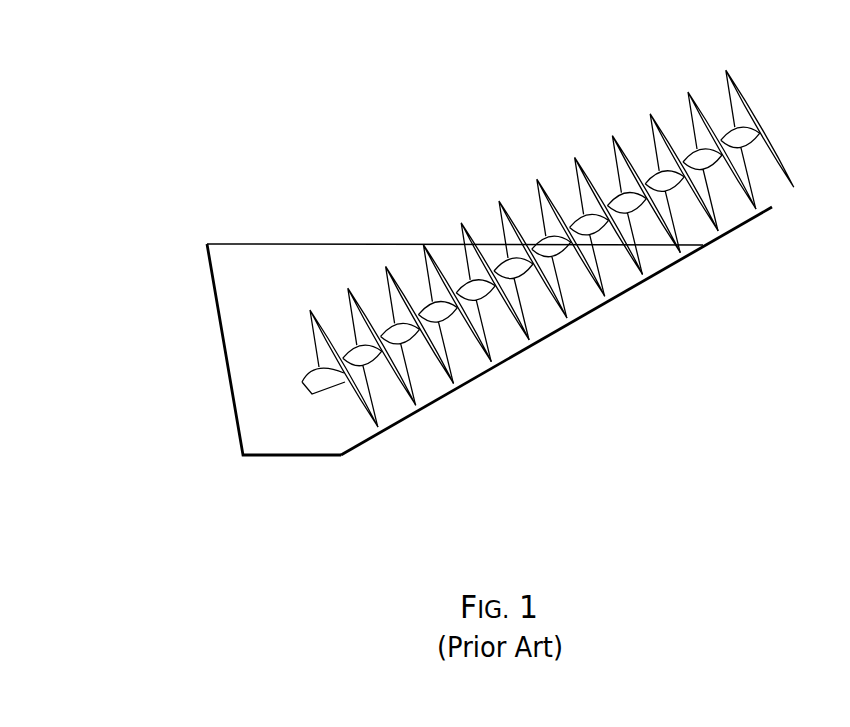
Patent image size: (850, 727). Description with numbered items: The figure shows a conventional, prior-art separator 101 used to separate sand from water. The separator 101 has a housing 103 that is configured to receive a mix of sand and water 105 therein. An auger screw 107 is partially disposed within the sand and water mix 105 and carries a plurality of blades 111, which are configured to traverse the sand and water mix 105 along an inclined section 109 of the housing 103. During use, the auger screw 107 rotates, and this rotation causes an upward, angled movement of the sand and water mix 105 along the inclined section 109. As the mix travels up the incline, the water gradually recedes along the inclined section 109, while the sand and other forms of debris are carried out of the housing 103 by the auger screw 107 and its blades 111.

The separator 101 is at (120, 83).
The housing 103 is at (175, 396).
The sand and water mix 105 is at (317, 245).
The auger screw 107 is at (496, 133).
The inclined section 109 is at (527, 348).
The blades 111 is at (753, 110).